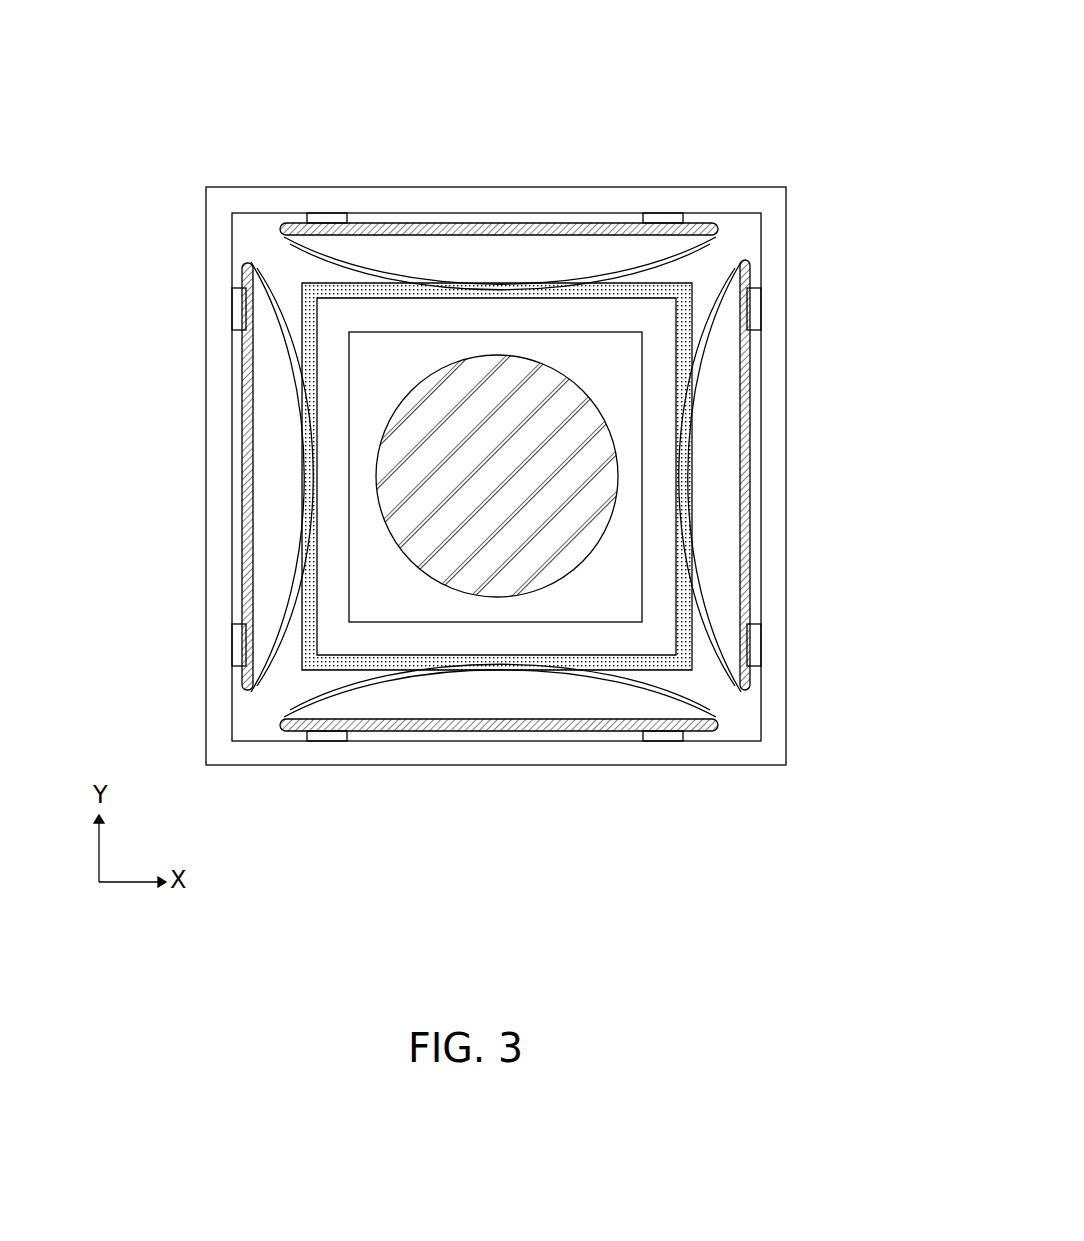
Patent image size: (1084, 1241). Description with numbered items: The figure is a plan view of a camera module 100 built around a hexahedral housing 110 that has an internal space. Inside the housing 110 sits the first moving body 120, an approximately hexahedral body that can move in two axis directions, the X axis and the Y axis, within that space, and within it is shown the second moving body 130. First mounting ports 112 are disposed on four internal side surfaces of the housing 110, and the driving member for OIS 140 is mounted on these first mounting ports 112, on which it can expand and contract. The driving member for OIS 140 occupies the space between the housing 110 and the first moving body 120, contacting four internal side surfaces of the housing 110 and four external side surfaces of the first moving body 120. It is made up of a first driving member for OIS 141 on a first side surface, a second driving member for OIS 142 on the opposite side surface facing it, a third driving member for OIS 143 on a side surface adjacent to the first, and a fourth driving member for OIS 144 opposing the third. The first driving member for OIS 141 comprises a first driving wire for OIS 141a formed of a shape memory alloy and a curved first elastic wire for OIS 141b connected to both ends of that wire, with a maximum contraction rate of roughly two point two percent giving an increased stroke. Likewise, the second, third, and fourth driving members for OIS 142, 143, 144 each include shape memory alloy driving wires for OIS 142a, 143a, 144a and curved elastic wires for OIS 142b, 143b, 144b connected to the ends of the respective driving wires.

The camera module 100 is at (525, 38).
The housing 110 is at (538, 756).
The first mounting ports 112 is at (327, 742).
The first moving body 120 is at (692, 288).
The second moving body 130 is at (592, 356).
The driving member for OIS 140 is at (804, 825).
The first driving member for OIS 141 is at (128, 433).
The first driving wire for OIS 141a is at (246, 503).
The first elastic wire for OIS 141b is at (283, 343).
The second driving member for OIS 142 is at (864, 433).
The second driving wire for OIS 142a is at (745, 502).
The second elastic wire for OIS 142b is at (704, 338).
The third driving member for OIS 143 is at (487, 840).
The third driving wire for OIS 143a is at (455, 728).
The third elastic wire for OIS 143b is at (370, 680).
The fourth driving member for OIS 144 is at (487, 116).
The fourth driving wire for OIS 144a is at (455, 228).
The fourth elastic wire for OIS 144b is at (370, 272).